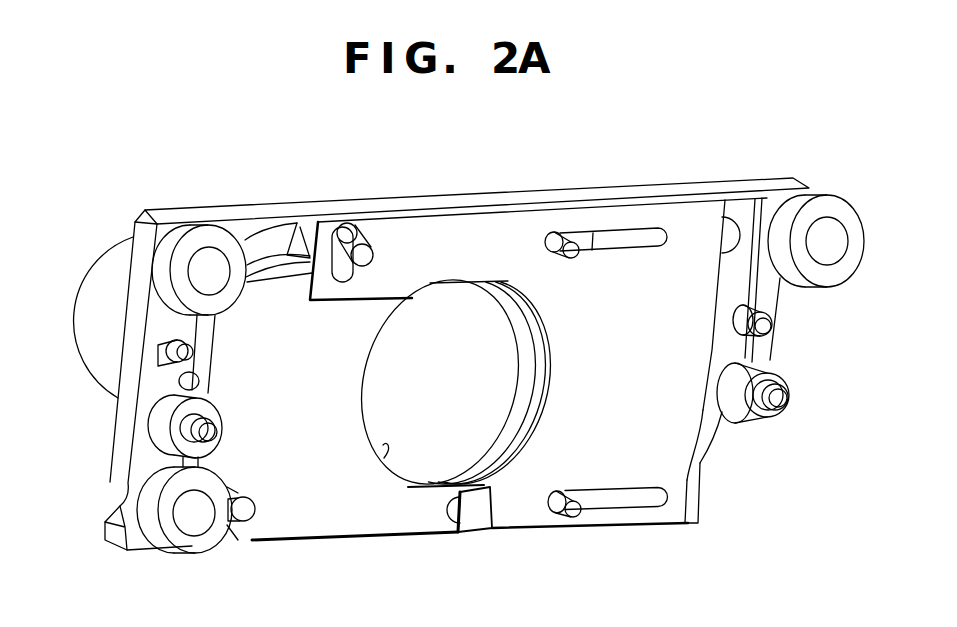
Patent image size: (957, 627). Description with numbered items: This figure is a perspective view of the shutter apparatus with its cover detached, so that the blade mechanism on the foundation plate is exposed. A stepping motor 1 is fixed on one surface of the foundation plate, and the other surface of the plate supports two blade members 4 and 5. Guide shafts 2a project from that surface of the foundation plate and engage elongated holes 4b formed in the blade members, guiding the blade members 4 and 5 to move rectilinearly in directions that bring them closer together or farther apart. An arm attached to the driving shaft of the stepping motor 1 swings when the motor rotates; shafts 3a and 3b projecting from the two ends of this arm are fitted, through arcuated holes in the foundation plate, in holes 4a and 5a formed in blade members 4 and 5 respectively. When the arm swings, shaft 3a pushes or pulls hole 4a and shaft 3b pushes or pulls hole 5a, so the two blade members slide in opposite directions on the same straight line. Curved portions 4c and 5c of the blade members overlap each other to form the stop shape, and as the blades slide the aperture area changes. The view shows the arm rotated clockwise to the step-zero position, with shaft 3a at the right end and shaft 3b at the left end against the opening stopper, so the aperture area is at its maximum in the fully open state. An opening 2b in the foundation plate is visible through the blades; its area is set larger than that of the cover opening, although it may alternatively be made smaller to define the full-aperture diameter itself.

The stepping motor 1 is at (73, 344).
The guide shafts 2a is at (576, 247).
The opening 2b is at (502, 415).
The shaft 3a is at (374, 258).
The shaft 3b is at (248, 514).
The blade member 4 is at (497, 224).
The hole 4a is at (357, 230).
The elongated hole 4b is at (650, 235).
The curved portion 4c is at (548, 430).
The blade member 5 is at (318, 518).
The hole 5a is at (232, 517).
The curved portion 5c is at (383, 447).